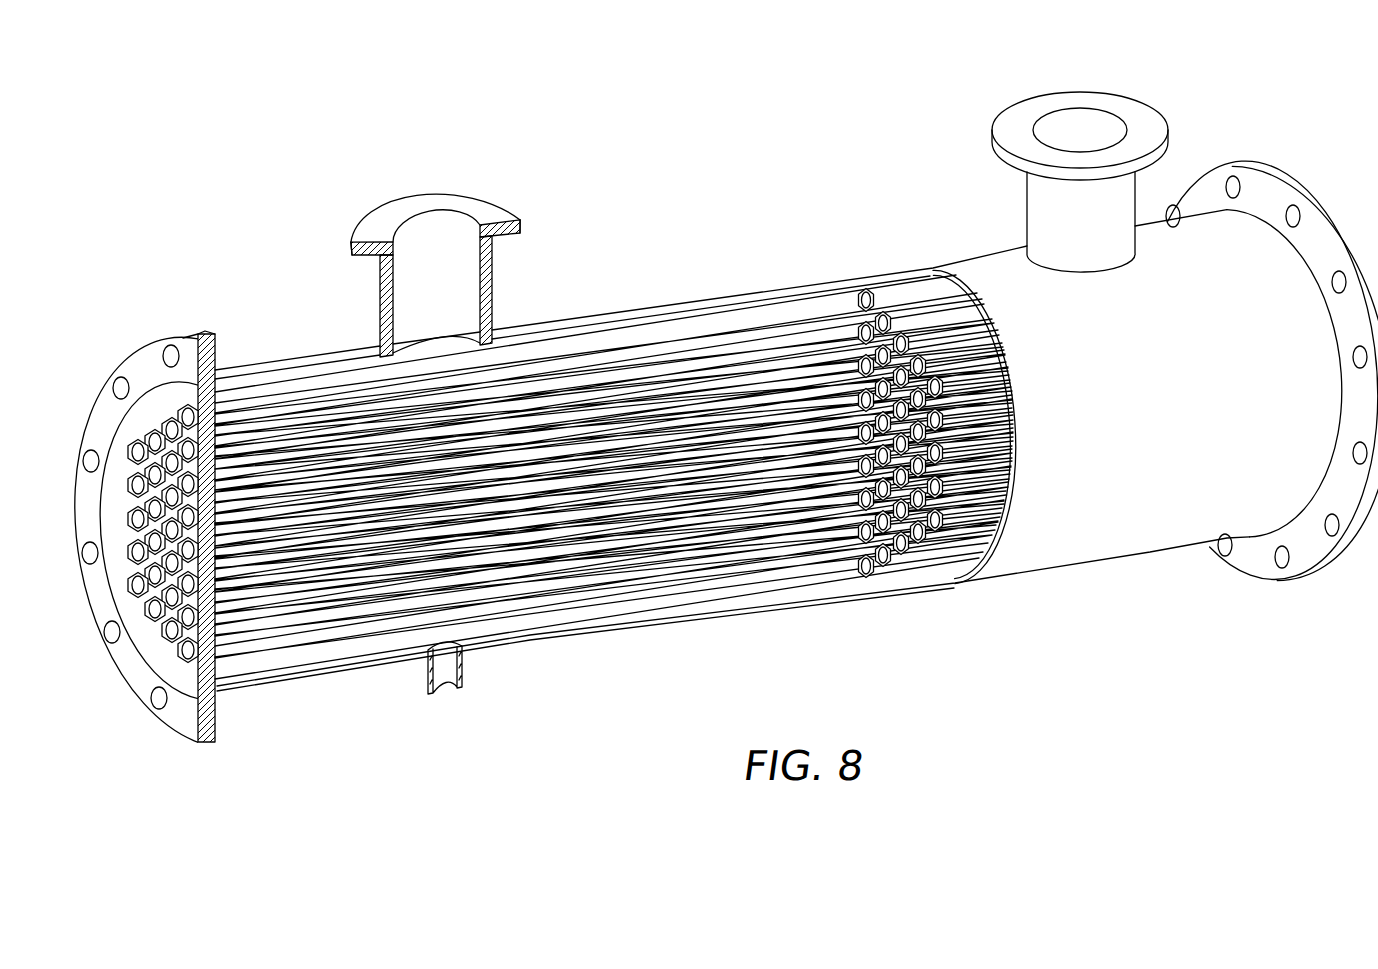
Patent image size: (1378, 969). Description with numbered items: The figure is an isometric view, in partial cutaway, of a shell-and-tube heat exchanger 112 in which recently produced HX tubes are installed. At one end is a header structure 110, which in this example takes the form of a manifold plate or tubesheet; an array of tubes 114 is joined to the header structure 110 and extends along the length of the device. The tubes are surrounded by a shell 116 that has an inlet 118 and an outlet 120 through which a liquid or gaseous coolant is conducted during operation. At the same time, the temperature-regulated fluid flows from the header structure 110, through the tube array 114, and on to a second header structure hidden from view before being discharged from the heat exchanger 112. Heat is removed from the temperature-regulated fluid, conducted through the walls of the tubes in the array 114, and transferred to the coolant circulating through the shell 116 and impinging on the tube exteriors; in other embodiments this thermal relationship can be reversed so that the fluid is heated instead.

The header structure 110 is at (160, 410).
The shell-and-tube heat exchanger 112 is at (210, 158).
The array of tubes 114 is at (780, 317).
The shell 116 is at (967, 260).
The inlet 118 is at (440, 200).
The shell-side nozzle 120 is at (1080, 90).